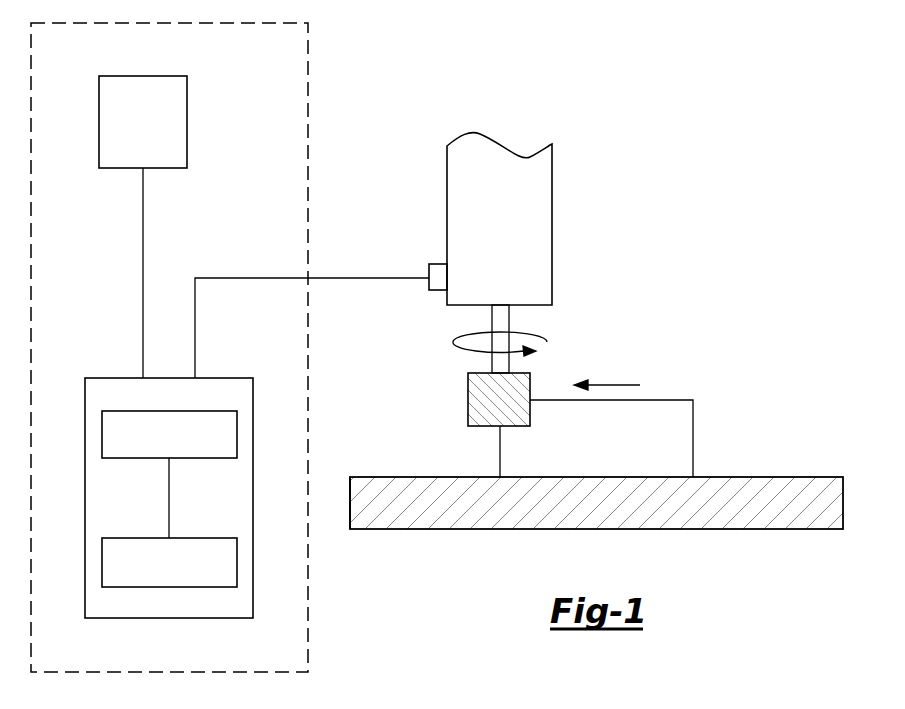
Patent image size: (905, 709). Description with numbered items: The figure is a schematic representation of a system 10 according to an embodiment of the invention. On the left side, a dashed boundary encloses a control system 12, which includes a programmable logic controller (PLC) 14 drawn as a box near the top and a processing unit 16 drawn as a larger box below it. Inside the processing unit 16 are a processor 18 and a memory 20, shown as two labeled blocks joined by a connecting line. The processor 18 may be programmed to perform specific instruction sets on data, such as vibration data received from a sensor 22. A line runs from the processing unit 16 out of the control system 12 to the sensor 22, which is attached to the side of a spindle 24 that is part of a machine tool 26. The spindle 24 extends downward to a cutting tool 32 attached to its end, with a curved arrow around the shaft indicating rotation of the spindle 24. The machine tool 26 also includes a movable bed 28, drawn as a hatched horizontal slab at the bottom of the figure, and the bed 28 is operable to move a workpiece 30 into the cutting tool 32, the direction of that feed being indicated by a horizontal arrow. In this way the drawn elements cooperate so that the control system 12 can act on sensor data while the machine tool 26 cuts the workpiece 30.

The system 10 is at (355, 88).
The control system 12 is at (308, 608).
The programmable logic controller (PLC) 14 is at (187, 122).
The processing unit 16 is at (228, 378).
The processor 18 is at (237, 430).
The memory 20 is at (237, 560).
The sensor 22 is at (437, 264).
The spindle 24 is at (552, 222).
The machine tool 26 is at (815, 470).
The movable bed 28 is at (350, 497).
The workpiece 30 is at (693, 418).
The cutting tool 32 is at (468, 395).